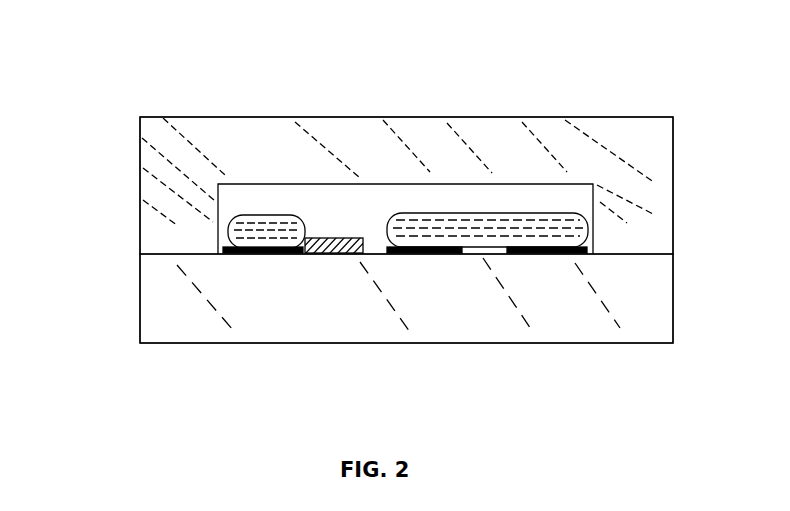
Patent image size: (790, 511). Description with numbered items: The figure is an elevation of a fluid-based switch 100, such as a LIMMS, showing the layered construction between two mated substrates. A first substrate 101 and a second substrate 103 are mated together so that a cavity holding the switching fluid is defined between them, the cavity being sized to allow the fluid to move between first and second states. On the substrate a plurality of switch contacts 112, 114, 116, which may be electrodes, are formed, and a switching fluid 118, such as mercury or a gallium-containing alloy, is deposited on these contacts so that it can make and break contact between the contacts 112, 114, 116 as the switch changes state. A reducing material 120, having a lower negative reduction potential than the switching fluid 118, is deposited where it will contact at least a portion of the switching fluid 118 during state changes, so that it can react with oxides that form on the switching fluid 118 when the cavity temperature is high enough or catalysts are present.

The switch 100 is at (114, 244).
The first substrate 101 is at (648, 143).
The substrate 103 is at (651, 278).
The switch contact 112 is at (277, 255).
The switch contact 114 is at (425, 256).
The switch contact 116 is at (545, 256).
The switching fluid 118 is at (443, 222).
The reducing material 120 is at (332, 256).